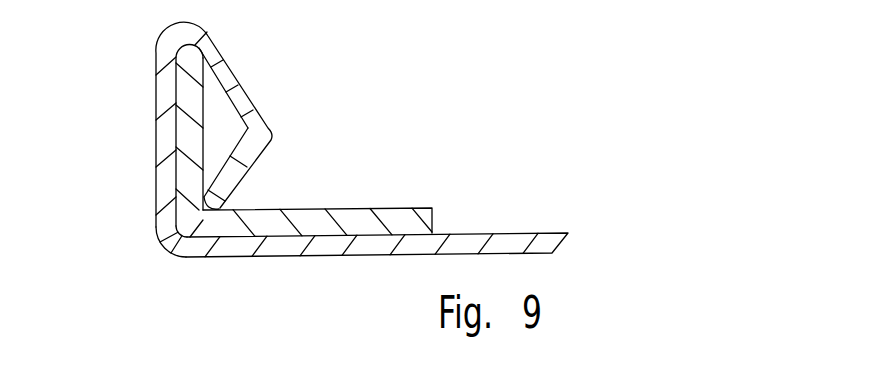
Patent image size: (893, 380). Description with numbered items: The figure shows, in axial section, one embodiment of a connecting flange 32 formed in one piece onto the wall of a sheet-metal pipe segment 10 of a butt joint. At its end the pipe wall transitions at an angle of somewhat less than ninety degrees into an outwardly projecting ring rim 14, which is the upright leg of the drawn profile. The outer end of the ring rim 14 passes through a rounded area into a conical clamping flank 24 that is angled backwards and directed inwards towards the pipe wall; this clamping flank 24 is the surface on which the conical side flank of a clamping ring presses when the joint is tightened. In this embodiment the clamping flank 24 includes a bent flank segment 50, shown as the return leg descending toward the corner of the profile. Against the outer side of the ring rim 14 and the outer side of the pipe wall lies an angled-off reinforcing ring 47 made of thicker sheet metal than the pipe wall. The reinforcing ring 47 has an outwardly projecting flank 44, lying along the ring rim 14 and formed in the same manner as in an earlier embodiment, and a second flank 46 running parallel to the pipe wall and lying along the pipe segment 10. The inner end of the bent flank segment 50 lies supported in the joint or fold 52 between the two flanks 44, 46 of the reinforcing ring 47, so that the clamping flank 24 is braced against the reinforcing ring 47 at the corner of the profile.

The pipe segment 10 is at (509, 221).
The ring rim 14 is at (165, 97).
The clamping flank 24 is at (222, 67).
The connecting flange 32 is at (144, 67).
The flank 44 is at (185, 128).
The flank 46 is at (321, 223).
The reinforcing ring 47 is at (160, 195).
The bent flank segment 50 is at (245, 158).
The joint or fold 52 is at (206, 207).